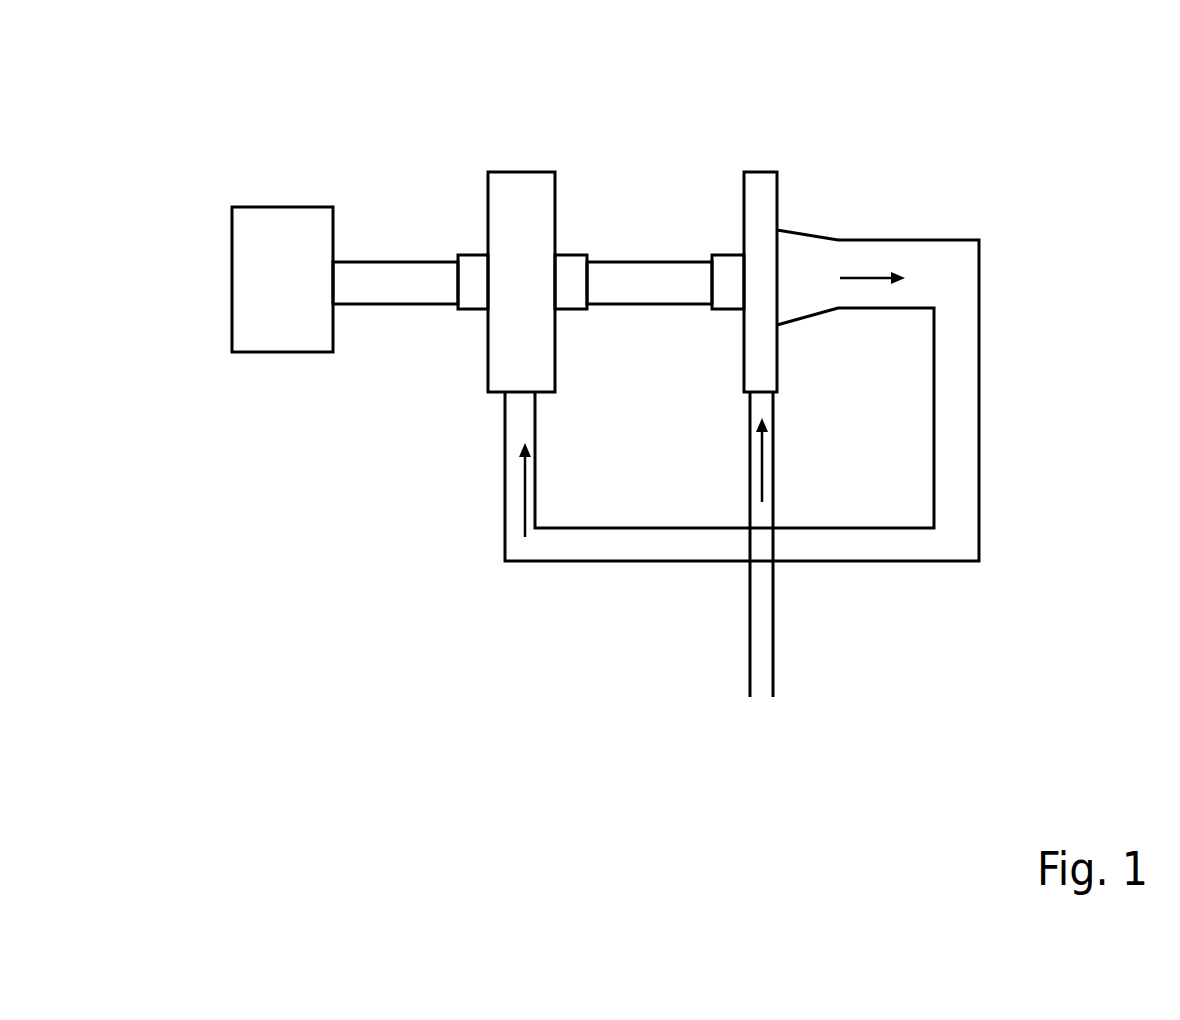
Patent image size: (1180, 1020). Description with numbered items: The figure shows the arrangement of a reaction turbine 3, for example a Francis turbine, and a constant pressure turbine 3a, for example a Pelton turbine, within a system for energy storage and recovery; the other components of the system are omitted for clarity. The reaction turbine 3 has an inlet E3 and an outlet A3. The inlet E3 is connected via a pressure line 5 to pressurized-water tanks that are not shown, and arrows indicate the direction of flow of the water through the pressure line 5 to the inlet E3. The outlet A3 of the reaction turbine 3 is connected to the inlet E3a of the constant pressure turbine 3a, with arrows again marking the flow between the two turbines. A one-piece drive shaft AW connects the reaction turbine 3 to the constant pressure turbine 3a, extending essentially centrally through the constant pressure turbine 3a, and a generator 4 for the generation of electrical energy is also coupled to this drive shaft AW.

The reaction turbine 3 is at (767, 172).
The constant pressure turbine 3a is at (538, 172).
The generator 4 is at (283, 352).
The pressure line 5 is at (565, 562).
The drive shaft AW is at (432, 304).
The outlet of reaction turbine A3 is at (813, 232).
The inlet of reaction turbine E3 is at (747, 395).
The inlet of constant pressure turbine E3a is at (505, 393).